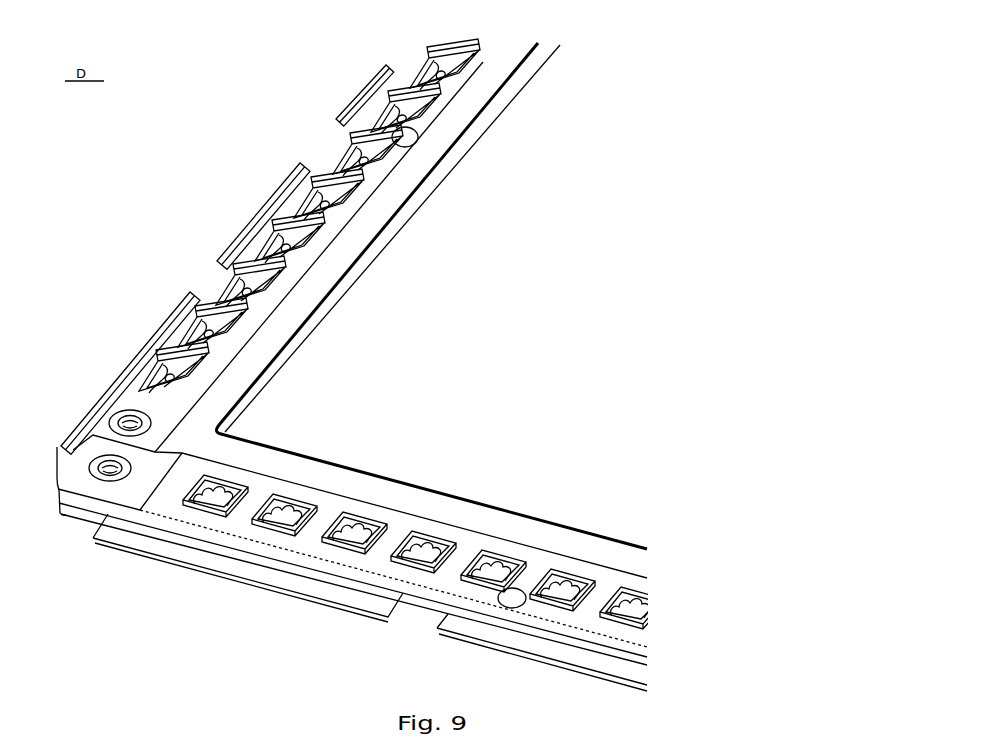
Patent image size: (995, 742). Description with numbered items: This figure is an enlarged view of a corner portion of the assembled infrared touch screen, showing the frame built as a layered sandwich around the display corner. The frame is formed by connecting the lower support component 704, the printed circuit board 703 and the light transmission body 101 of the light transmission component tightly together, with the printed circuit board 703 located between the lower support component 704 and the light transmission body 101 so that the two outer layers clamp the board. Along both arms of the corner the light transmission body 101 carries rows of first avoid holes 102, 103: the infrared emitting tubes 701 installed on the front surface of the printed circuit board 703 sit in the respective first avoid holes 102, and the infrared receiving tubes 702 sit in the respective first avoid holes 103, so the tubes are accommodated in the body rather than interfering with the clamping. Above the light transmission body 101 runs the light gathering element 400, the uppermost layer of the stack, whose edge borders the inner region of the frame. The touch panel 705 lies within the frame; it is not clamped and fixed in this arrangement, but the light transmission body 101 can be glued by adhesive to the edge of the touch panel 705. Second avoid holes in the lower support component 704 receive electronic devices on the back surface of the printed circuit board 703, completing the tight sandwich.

The light transmission body 101 is at (452, 508).
The first avoid hole 102 is at (372, 521).
The first avoid hole 103 is at (207, 327).
The light gathering element 400 is at (197, 472).
The infrared emitting tube 701 is at (208, 498).
The infrared receiving tube 702 is at (160, 383).
The printed circuit board 703 is at (183, 317).
The lower support component 704 is at (76, 522).
The touch panel 705 is at (478, 193).